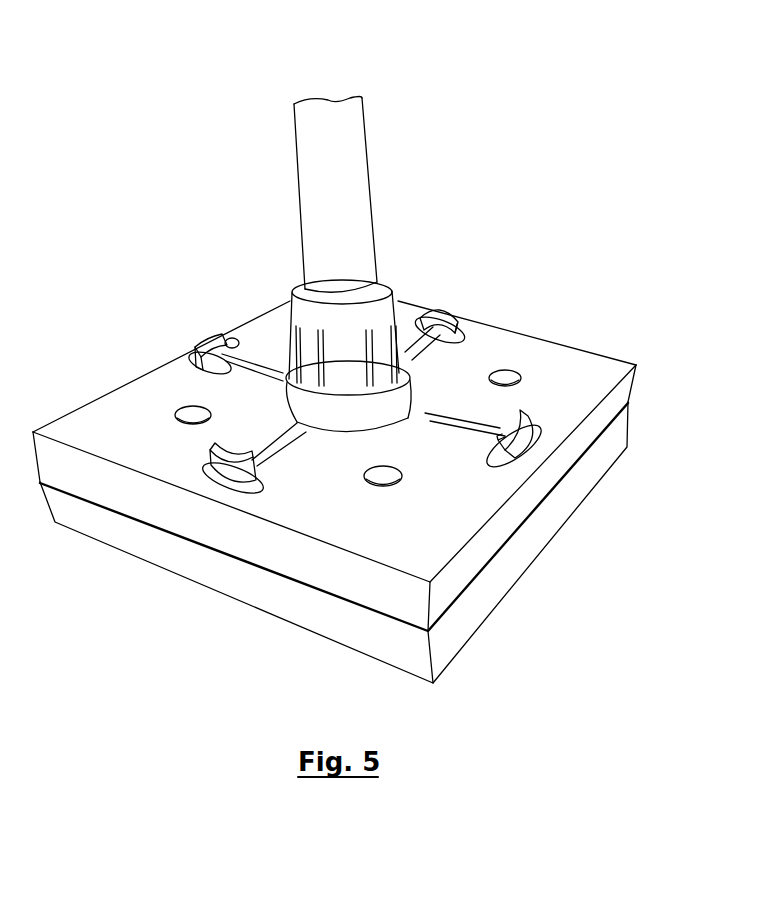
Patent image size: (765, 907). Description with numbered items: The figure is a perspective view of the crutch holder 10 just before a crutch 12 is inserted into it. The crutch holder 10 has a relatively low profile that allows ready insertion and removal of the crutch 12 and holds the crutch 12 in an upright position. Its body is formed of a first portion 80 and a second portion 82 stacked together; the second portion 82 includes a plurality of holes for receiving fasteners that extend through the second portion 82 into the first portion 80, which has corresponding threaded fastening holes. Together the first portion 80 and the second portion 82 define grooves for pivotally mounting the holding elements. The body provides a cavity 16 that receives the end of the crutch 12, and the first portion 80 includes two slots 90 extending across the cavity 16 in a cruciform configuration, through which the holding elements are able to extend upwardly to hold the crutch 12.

The crutch holder 10 is at (552, 122).
The crutch 12 is at (357, 139).
The cavity 16 is at (337, 434).
The first portion 80 is at (458, 625).
The second portion 82 is at (483, 563).
The slots 90 is at (417, 312).